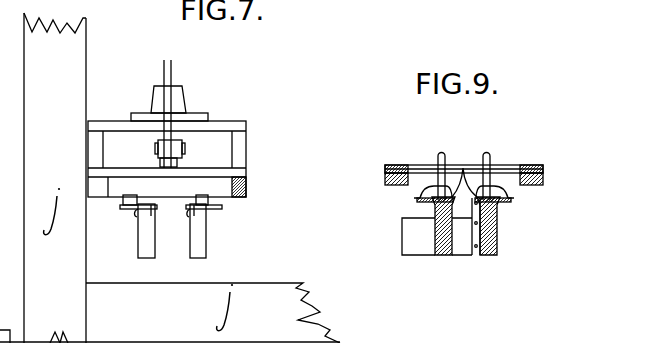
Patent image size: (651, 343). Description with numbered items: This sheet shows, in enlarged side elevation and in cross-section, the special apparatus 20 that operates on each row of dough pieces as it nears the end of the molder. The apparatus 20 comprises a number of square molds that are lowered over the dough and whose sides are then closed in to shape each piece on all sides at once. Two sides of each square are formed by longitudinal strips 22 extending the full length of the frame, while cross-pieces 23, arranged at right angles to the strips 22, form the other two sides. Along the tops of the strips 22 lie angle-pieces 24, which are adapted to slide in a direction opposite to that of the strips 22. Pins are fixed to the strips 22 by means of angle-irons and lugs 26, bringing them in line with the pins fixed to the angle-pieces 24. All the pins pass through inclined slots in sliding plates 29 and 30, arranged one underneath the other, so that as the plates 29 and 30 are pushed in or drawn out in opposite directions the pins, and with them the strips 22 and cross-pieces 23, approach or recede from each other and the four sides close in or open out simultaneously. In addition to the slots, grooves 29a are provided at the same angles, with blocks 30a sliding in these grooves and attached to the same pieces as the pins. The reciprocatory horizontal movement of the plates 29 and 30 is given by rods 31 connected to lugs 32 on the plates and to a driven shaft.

In FIG. 7, the special apparatus 20 is at (183, 141).
In FIG. 7, the rods 31 is at (173, 68).
In FIG. 7, the lugs 32 is at (179, 162).
In FIG. 7, the grooves 29a is at (245, 187).
In FIG. 7, the blocks 30a is at (218, 202).
In FIG. 7, the longitudinal strips 22 is at (190, 239).
In FIG. 9, the longitudinal strips 22 is at (498, 240).
In FIG. 9, the sliding plate 30 is at (401, 166).
In FIG. 9, the sliding plate 29 is at (388, 178).
In FIG. 9, the angle-pieces 24 is at (463, 168).
In FIG. 9, the lugs 26 is at (416, 198).
In FIG. 9, the cross-pieces 23 is at (441, 226).